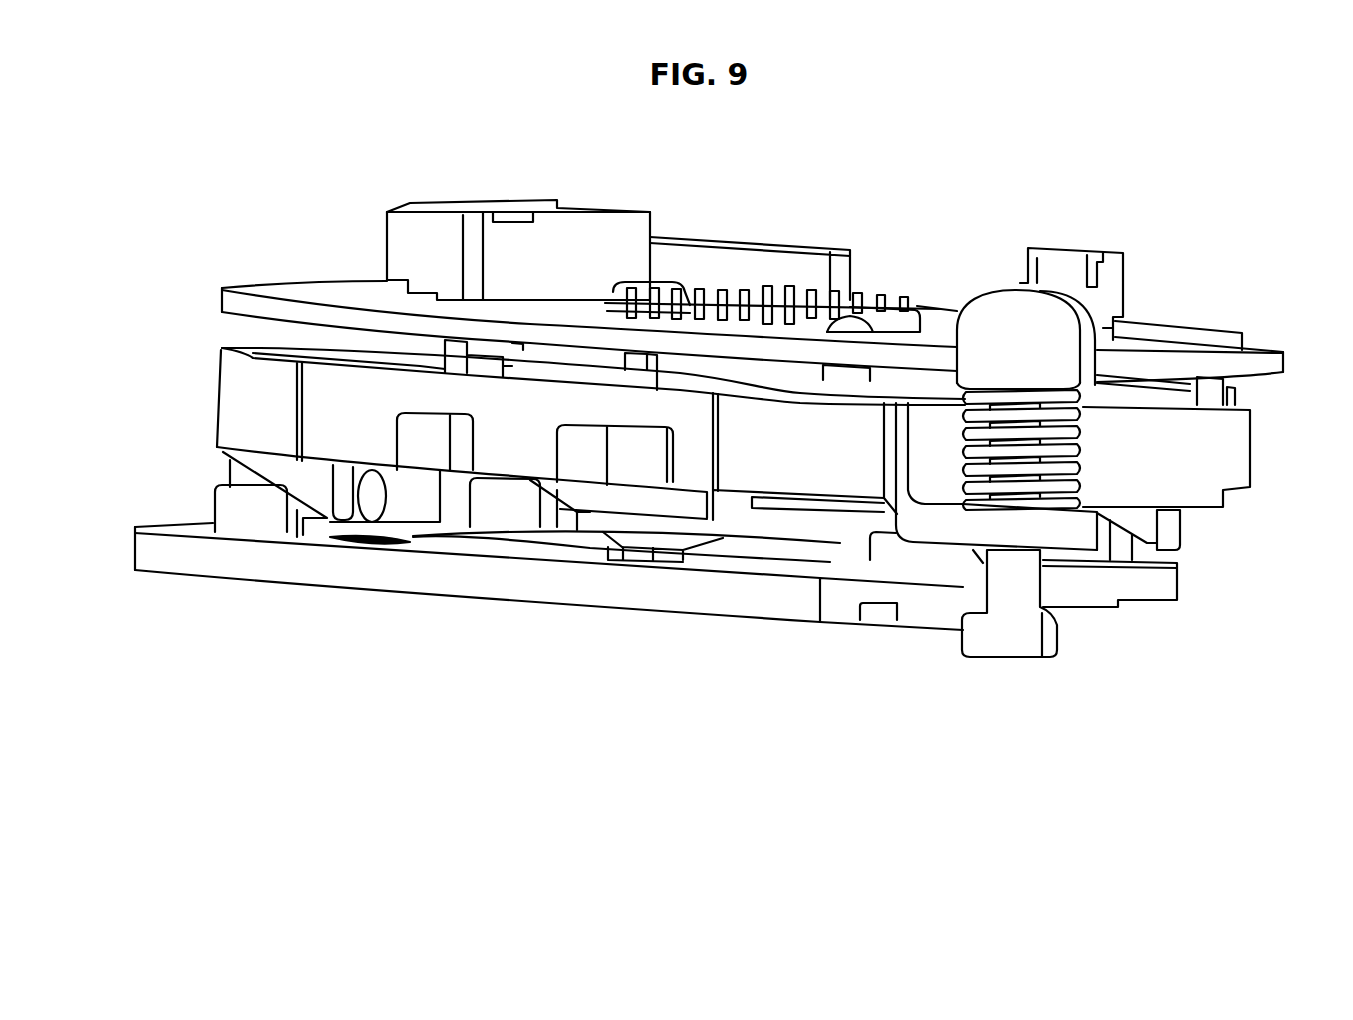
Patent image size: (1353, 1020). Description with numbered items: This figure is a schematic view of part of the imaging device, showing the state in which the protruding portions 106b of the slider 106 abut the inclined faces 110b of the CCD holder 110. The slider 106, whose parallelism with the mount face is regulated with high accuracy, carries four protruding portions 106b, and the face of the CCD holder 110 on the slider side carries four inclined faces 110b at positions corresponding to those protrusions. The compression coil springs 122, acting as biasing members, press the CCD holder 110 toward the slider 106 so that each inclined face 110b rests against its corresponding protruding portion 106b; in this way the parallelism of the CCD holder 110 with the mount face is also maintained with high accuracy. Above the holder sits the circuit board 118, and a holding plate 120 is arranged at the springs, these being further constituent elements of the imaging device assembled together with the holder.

The slider 106 is at (573, 585).
The protruding portions 106b is at (245, 523).
The CCD holder 110 is at (331, 393).
The inclined faces 110b is at (297, 512).
The circuit board 118 is at (778, 350).
The holding plates 120 is at (997, 308).
The compression coil springs 122 is at (1073, 433).